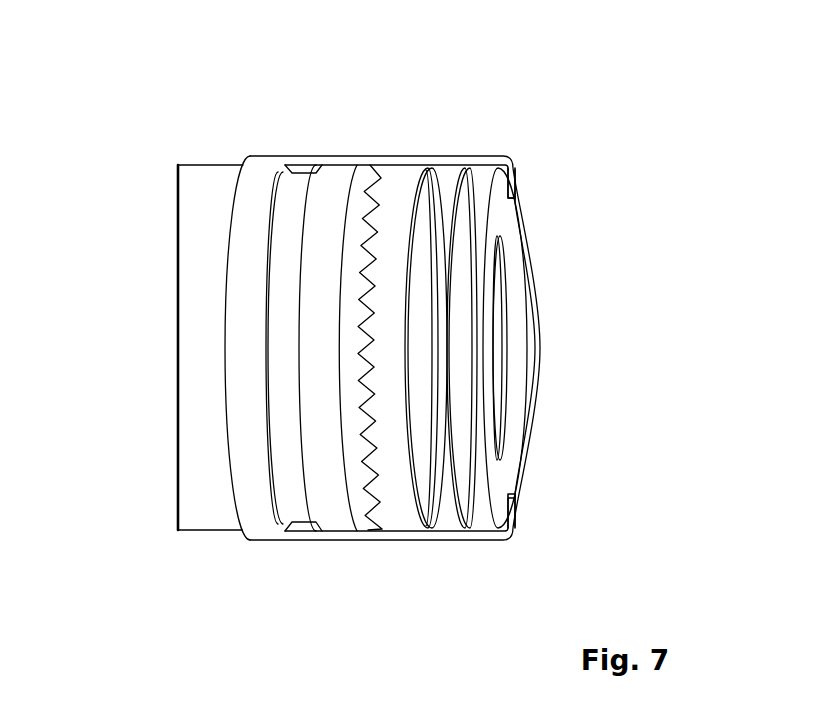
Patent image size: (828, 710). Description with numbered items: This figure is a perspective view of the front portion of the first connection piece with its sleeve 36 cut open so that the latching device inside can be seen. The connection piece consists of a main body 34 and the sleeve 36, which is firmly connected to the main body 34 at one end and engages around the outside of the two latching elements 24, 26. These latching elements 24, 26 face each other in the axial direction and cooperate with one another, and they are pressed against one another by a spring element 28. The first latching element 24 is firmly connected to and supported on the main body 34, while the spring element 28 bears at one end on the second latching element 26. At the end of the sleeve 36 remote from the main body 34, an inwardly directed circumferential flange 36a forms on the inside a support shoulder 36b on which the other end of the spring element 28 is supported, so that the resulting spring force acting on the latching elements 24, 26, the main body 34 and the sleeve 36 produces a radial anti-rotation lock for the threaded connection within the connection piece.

The first latching element 24 is at (362, 198).
The second latching element 26 is at (398, 192).
The spring element 28 is at (468, 200).
The main body 34 is at (202, 195).
The sleeve 36 is at (519, 178).
The inwardly directed circumferential flange 36a is at (519, 502).
The support shoulder 36b is at (508, 196).